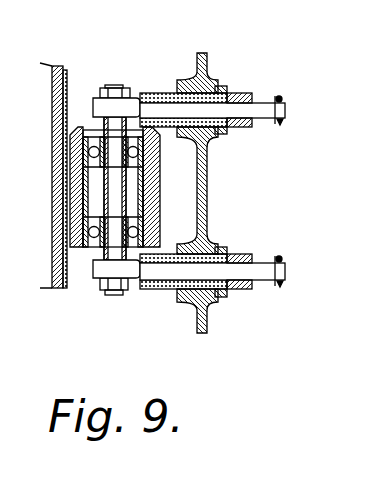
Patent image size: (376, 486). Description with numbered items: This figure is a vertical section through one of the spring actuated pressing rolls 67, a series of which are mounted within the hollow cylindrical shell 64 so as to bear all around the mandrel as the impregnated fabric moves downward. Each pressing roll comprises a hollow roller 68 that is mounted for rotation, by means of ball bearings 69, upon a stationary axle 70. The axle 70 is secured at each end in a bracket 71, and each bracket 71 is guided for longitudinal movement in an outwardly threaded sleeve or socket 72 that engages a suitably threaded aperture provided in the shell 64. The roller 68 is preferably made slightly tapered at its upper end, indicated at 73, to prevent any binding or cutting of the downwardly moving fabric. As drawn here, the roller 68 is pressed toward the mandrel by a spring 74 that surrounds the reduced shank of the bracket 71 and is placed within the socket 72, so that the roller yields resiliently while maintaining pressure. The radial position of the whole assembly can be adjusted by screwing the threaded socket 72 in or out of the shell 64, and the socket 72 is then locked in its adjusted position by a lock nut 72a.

The hollow cylindrical shell 64 is at (208, 201).
The pressing rolls 67 is at (89, 248).
The hollow roller 68 is at (74, 248).
The ball bearings 69 is at (141, 183).
The stationary axle 70 is at (112, 87).
The bracket 71 is at (128, 108).
The threaded sleeve or socket 72 is at (237, 94).
The lock nut 72a is at (228, 250).
The tapered upper end of roller 73 is at (71, 126).
The spring 74 is at (226, 91).